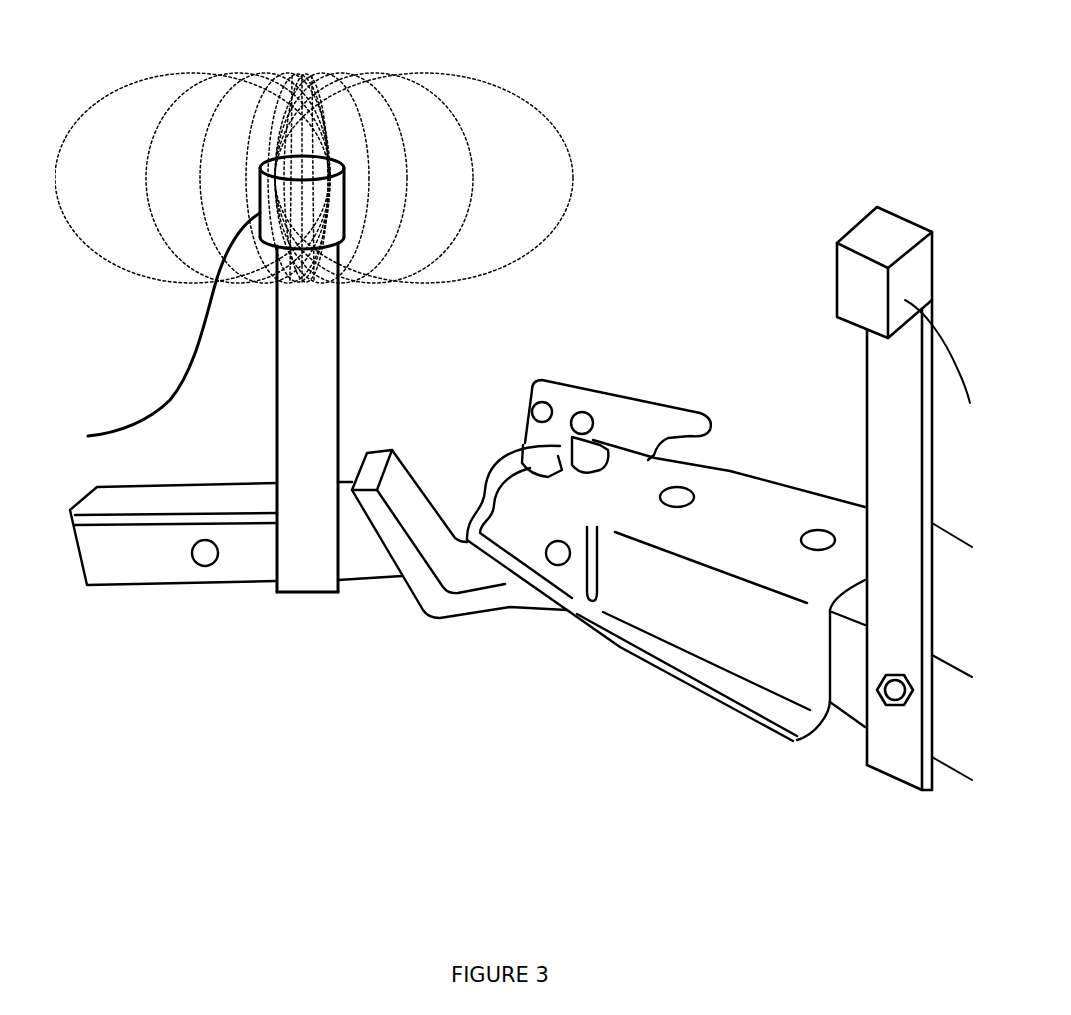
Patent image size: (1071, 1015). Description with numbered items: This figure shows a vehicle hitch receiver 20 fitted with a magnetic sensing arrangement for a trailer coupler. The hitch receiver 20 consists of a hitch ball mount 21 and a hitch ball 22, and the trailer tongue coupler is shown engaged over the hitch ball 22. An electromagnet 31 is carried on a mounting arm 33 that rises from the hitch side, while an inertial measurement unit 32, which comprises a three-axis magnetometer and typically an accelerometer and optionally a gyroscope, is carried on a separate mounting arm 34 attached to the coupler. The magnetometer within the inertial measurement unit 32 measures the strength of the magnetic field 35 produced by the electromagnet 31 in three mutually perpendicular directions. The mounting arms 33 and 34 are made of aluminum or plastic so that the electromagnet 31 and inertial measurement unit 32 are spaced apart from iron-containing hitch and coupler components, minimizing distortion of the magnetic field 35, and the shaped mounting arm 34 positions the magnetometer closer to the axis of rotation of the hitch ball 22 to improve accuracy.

The hitch receiver 20 is at (300, 697).
The hitch ball mount 21 is at (421, 617).
The hitch ball 22 is at (513, 597).
The electromagnet 31 is at (258, 183).
The inertial measurement unit (IMU) 32 is at (828, 250).
The mounting arm 33 is at (310, 358).
The mounting arm 34 is at (895, 772).
The magnetic field 35 is at (370, 72).